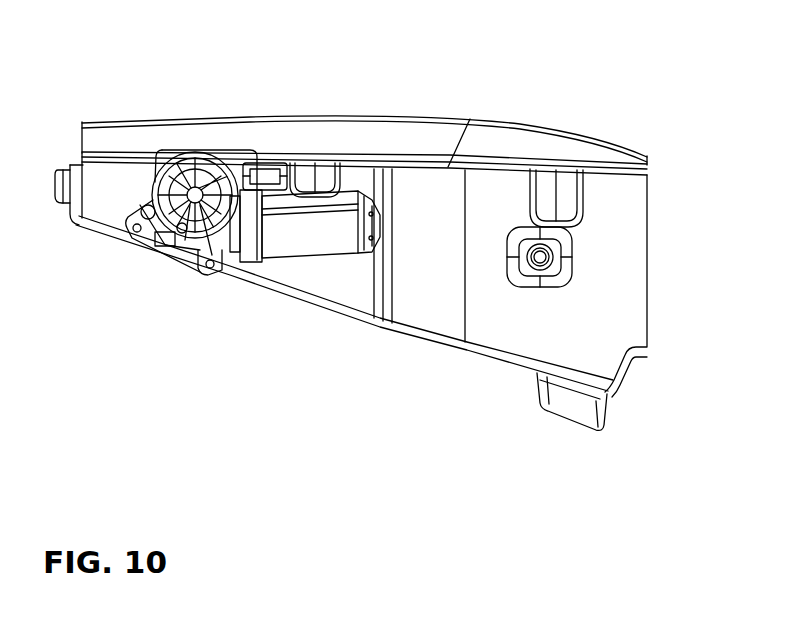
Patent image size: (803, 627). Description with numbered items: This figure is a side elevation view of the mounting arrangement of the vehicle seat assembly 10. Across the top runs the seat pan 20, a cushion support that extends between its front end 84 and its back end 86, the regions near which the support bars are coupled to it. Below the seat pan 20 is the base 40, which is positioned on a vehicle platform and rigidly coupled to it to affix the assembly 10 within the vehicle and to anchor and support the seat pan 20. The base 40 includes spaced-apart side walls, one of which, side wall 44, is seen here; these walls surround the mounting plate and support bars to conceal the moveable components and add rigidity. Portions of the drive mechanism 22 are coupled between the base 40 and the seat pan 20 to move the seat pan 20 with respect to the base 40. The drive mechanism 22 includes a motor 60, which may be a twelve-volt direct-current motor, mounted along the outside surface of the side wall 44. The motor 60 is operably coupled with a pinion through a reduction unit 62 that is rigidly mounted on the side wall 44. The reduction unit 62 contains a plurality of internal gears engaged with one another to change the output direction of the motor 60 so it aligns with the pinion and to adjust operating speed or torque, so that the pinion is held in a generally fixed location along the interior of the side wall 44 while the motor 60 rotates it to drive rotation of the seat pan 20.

The vehicle seat assembly 10 is at (176, 108).
The seat pan 20 is at (478, 140).
The drive mechanism 22 is at (173, 279).
The base 40 is at (649, 273).
The side wall 44 is at (507, 313).
The motor 60 is at (293, 240).
The reduction unit 62 is at (170, 236).
The front end 84 is at (657, 161).
The back end 86 is at (80, 139).